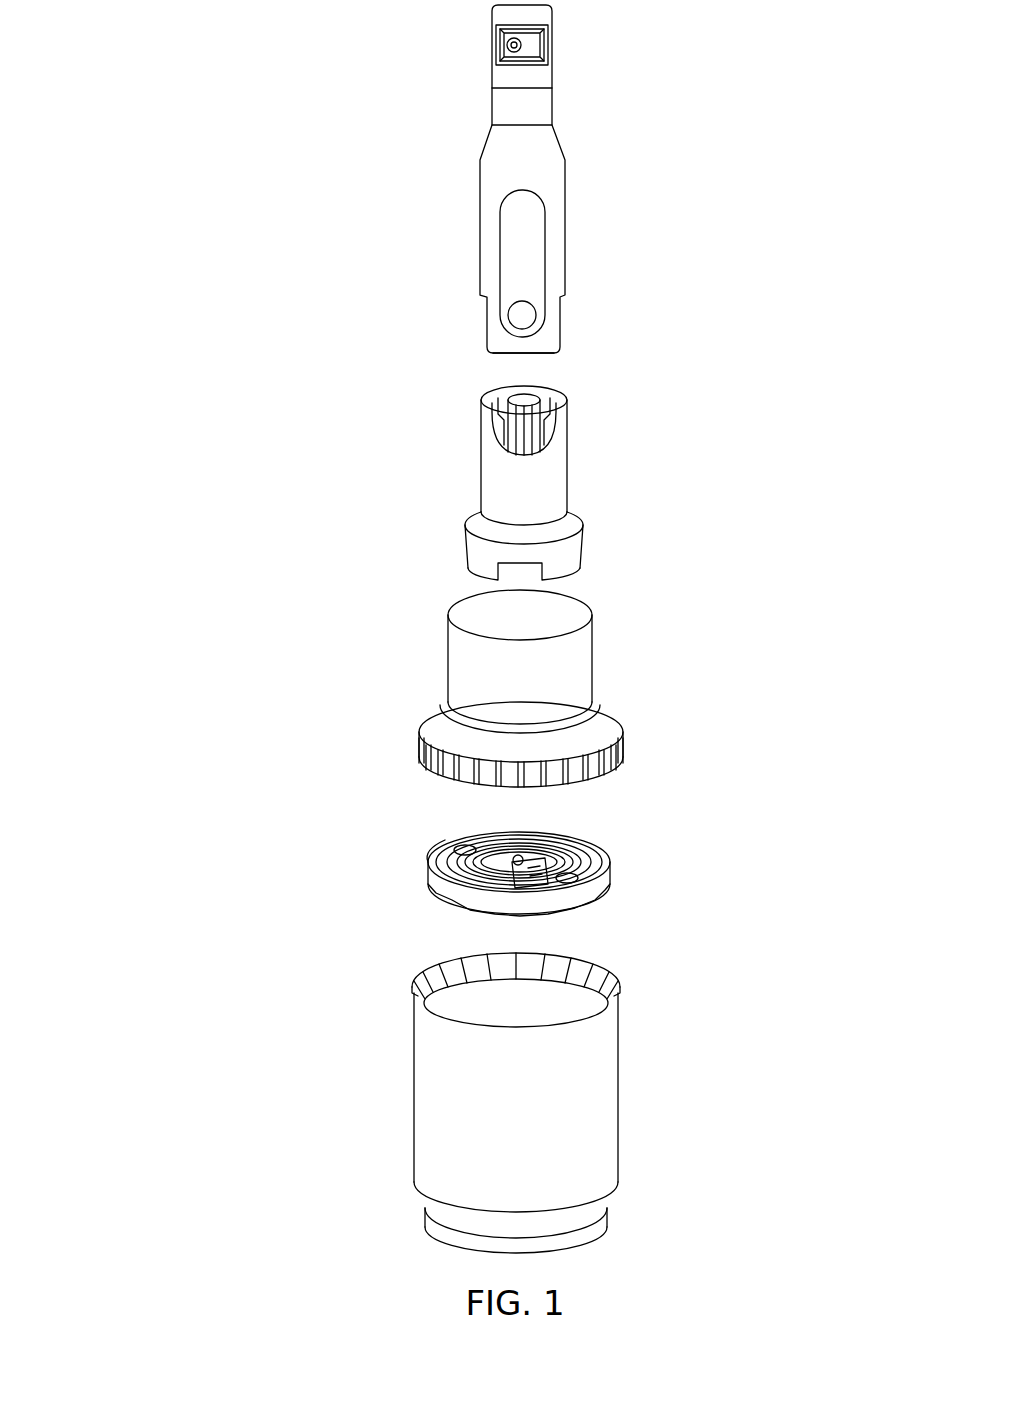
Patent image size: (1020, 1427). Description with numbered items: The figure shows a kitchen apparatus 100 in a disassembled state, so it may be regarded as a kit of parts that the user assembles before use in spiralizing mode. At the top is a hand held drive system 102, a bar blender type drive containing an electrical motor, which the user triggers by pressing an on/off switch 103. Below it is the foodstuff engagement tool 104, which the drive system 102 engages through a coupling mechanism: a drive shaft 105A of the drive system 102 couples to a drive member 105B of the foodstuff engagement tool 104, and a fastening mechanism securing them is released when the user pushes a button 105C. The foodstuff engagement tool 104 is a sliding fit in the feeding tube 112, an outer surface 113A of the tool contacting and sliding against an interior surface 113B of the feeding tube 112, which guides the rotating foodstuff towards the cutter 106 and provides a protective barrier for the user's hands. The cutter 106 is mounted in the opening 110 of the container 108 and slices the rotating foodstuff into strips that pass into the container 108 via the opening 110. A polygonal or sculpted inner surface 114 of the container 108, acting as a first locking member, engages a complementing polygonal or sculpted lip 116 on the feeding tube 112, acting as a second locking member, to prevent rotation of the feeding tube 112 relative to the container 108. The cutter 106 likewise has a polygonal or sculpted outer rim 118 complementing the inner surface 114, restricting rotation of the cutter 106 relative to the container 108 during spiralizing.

The kitchen apparatus 100 is at (183, 84).
The drive system 102 is at (600, 196).
The on/off switch 103 is at (522, 45).
The foodstuff engagement tool 104 is at (516, 478).
The drive shaft 105A is at (523, 354).
The drive member 105B is at (522, 412).
The button 105C is at (522, 315).
The cutter 106 is at (513, 874).
The container 108 is at (532, 1091).
The opening 110 is at (517, 997).
The feeding tube 112 is at (512, 688).
The outer surface 113A is at (563, 557).
The interior surface 113B is at (482, 622).
The first locking member 114 is at (449, 980).
The second locking member 116 is at (437, 770).
The further locking member 118 is at (428, 883).